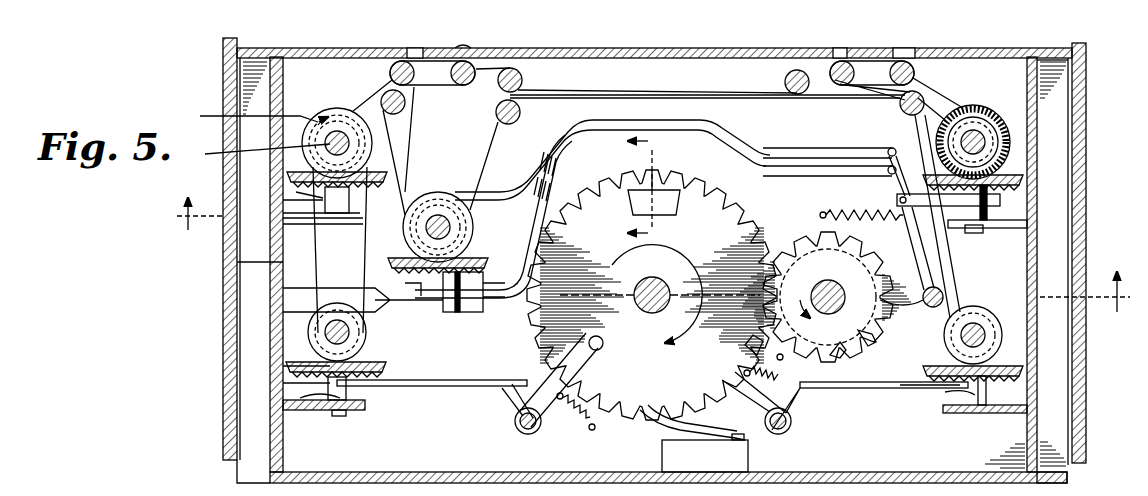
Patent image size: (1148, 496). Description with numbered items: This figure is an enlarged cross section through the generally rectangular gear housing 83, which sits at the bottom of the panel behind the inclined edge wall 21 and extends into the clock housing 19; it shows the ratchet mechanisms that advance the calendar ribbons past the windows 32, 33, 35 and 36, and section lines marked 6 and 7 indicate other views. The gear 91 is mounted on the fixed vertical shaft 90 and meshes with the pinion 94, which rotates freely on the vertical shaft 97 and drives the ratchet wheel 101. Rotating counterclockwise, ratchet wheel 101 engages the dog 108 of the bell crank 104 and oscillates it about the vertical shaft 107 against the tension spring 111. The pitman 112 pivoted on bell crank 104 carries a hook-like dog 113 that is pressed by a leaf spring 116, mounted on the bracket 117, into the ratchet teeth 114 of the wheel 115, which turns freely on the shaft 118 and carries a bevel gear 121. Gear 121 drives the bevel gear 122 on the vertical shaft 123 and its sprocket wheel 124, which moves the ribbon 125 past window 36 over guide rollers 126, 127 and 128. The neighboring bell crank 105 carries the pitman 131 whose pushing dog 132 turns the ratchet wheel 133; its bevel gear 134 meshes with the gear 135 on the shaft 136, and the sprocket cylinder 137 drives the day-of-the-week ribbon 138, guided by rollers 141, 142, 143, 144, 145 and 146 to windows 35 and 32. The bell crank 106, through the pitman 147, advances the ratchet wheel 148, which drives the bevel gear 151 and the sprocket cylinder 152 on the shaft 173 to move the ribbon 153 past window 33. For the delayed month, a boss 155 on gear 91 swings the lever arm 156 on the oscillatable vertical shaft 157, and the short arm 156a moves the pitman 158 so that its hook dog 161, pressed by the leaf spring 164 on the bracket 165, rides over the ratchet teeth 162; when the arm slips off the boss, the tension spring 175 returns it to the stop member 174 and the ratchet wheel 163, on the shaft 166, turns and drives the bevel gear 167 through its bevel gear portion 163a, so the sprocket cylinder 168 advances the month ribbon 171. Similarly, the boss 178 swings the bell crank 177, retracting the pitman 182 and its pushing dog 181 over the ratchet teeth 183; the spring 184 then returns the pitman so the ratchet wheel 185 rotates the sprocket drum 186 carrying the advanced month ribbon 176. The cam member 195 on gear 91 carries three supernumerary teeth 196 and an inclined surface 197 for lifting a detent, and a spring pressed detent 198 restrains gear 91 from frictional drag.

The clock housing 19 is at (221, 95).
The inclined edge wall 21 is at (758, 50).
The gear housing 83 is at (235, 432).
The window 33 is at (412, 50).
The window 35 is at (465, 47).
The guide roller 127 is at (830, 55).
The guide roller 126 is at (915, 56).
The section line 6 is at (656, 261).
The section line 7 is at (650, 189).
The ribbon 153 is at (390, 76).
The guide roller 144 is at (480, 62).
The guide roller 145 is at (425, 82).
The guide roller 146 is at (406, 108).
The guide roller 143 is at (523, 78).
The guide roller 141 is at (521, 112).
The guide roller 142 is at (784, 82).
The window 32 is at (848, 58).
The window 36 is at (890, 60).
The guide roller 128 is at (900, 105).
The ribbon 138 is at (406, 168).
The sprocket cylinder 152 is at (345, 116).
The bevel gear 151 is at (247, 116).
The shaft 173 is at (254, 153).
The ratchet wheel 148 is at (290, 178).
The ratchet wheel 133 is at (390, 272).
The ribbon 171 is at (283, 262).
The bevel gear 167 is at (368, 332).
The sprocket cylinder 168 is at (305, 330).
The ratchet teeth 162 is at (380, 366).
The bevel gear portion 163a is at (290, 365).
The ratchet wheel 163 is at (283, 370).
The hook dog 161 is at (283, 383).
The shaft 166 is at (366, 406).
The leaf spring 164 is at (312, 412).
The bracket 165 is at (350, 414).
The gear 135 is at (474, 226).
The shaft 136 is at (436, 214).
The sprocket cylinder 137 is at (452, 200).
The bevel gear 134 is at (480, 262).
The pushing dog 132 is at (446, 312).
The pitman 147 is at (538, 170).
The pitman 131 is at (548, 174).
The vertical shaft 90 is at (645, 306).
The supernumerary teeth 196 is at (668, 185).
The cam member 195 is at (626, 206).
The inclined surface 197 is at (682, 206).
The gear 91 is at (745, 222).
The boss 178 is at (745, 348).
The dog 108 is at (835, 316).
The vertical shaft 97 is at (826, 283).
The ratchet wheel 101 is at (872, 338).
The pinion 94 is at (845, 357).
The tension spring 111 is at (846, 216).
The bell crank 105 is at (897, 200).
The bell crank 106 is at (893, 150).
The bell crank 104 is at (908, 240).
The vertical shaft 107 is at (944, 297).
The pitman 112 is at (946, 262).
The leaf spring 116 is at (968, 234).
The shaft 118 is at (1000, 212).
The bracket 117 is at (1027, 225).
The sprocket wheel 124 is at (990, 118).
The vertical shaft 123 is at (985, 142).
The ribbon 125 is at (945, 95).
The bevel gear 122 is at (1040, 112).
The bevel gear 121 is at (1030, 162).
The wheel 115 is at (1020, 178).
The ratchet teeth 114 is at (1022, 181).
The hook-like dog 113 is at (1010, 199).
The ribbon 176 is at (992, 306).
The sprocket drum 186 is at (1003, 335).
The ratchet wheel 185 is at (1020, 371).
The pushing dog 181 is at (990, 414).
The ratchet teeth 183 is at (925, 391).
The pitman 182 is at (872, 392).
The pitman 158 is at (456, 378).
The oscillatable vertical shaft 157 is at (516, 428).
The boss 155 is at (603, 350).
The lever arm 156 is at (527, 382).
The short arm 156a is at (505, 412).
The stop member 174 is at (560, 402).
The tension spring 175 is at (592, 430).
The bell crank 177 is at (778, 434).
The spring 184 is at (782, 360).
The spring pressed detent 198 is at (668, 440).